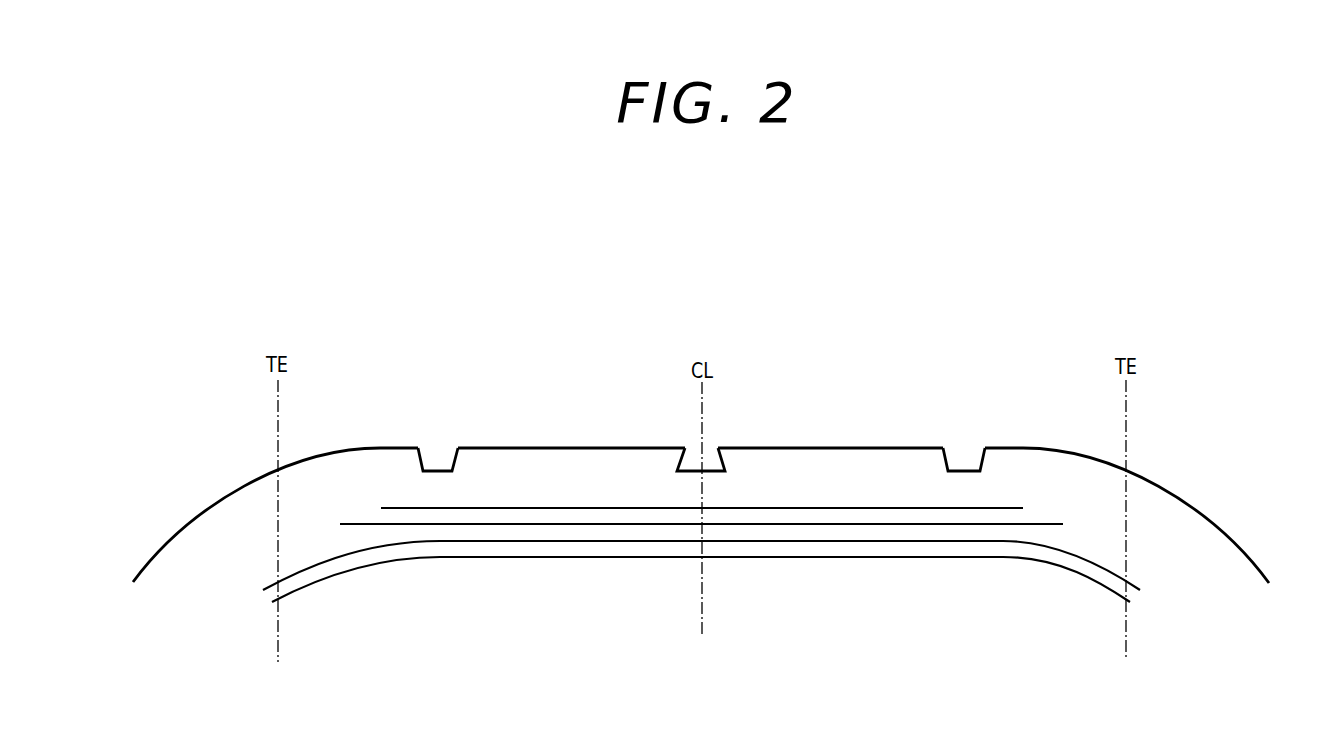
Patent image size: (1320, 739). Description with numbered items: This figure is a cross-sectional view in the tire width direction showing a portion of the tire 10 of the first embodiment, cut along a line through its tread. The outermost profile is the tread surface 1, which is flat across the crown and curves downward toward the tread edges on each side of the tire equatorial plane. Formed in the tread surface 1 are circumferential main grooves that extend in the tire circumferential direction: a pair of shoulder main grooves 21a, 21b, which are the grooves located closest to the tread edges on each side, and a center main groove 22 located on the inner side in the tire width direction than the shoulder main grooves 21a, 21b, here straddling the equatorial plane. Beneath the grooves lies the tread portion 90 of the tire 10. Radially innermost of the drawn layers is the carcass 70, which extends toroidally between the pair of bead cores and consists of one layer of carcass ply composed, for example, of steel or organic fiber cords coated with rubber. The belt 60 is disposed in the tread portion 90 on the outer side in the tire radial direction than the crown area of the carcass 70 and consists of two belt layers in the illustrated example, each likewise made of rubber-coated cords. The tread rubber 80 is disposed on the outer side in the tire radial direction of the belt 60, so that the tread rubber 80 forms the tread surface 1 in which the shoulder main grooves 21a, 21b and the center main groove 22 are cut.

The tire 10 is at (701, 404).
The tread surface 1 is at (701, 386).
The tread portion 90 is at (520, 388).
The tread rubber 80 is at (357, 477).
The shoulder main groove 21a is at (440, 458).
The shoulder main groove 21b is at (962, 458).
The center main groove 22 is at (695, 460).
The belt 60 is at (1037, 513).
The carcass 70 is at (1073, 553).